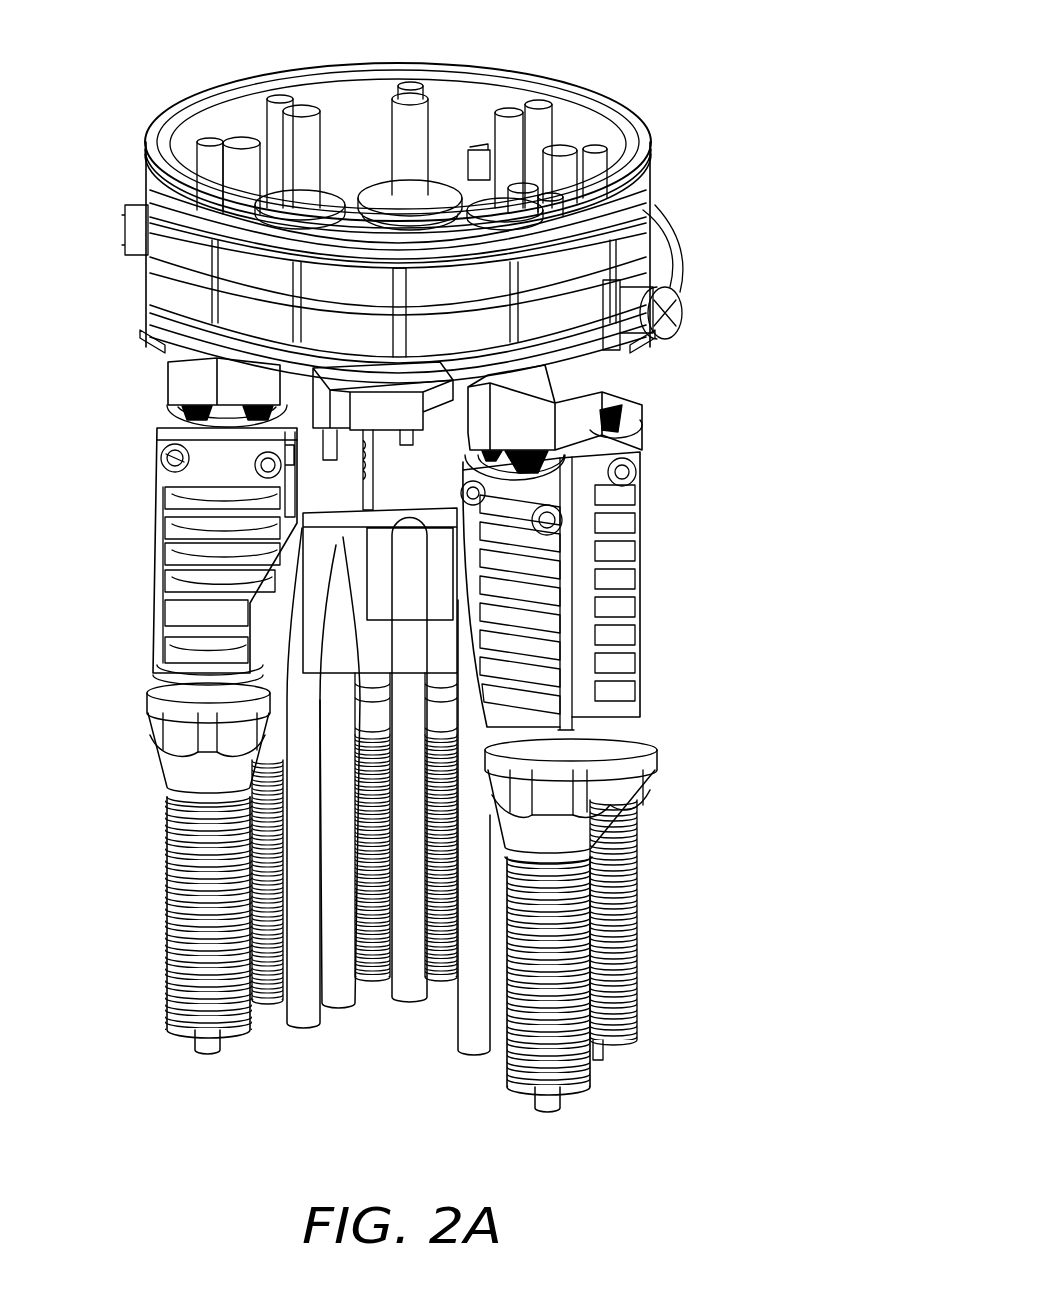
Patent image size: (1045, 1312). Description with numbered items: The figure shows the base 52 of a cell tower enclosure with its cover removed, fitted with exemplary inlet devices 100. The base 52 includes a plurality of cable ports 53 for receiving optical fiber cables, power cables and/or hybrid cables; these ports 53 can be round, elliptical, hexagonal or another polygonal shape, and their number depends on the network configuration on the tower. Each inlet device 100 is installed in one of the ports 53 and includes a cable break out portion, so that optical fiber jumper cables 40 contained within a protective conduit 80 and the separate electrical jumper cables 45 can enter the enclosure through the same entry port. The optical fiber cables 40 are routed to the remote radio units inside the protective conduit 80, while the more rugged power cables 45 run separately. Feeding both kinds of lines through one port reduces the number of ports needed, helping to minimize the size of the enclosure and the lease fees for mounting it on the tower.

The base 52 is at (640, 45).
The cable port 53 is at (178, 373).
The inlet device 100 is at (140, 528).
The protective conduit 80 is at (150, 903).
The electrical jumper cable 45 is at (300, 1010).
The optical fiber jumper cable 40 is at (198, 1047).